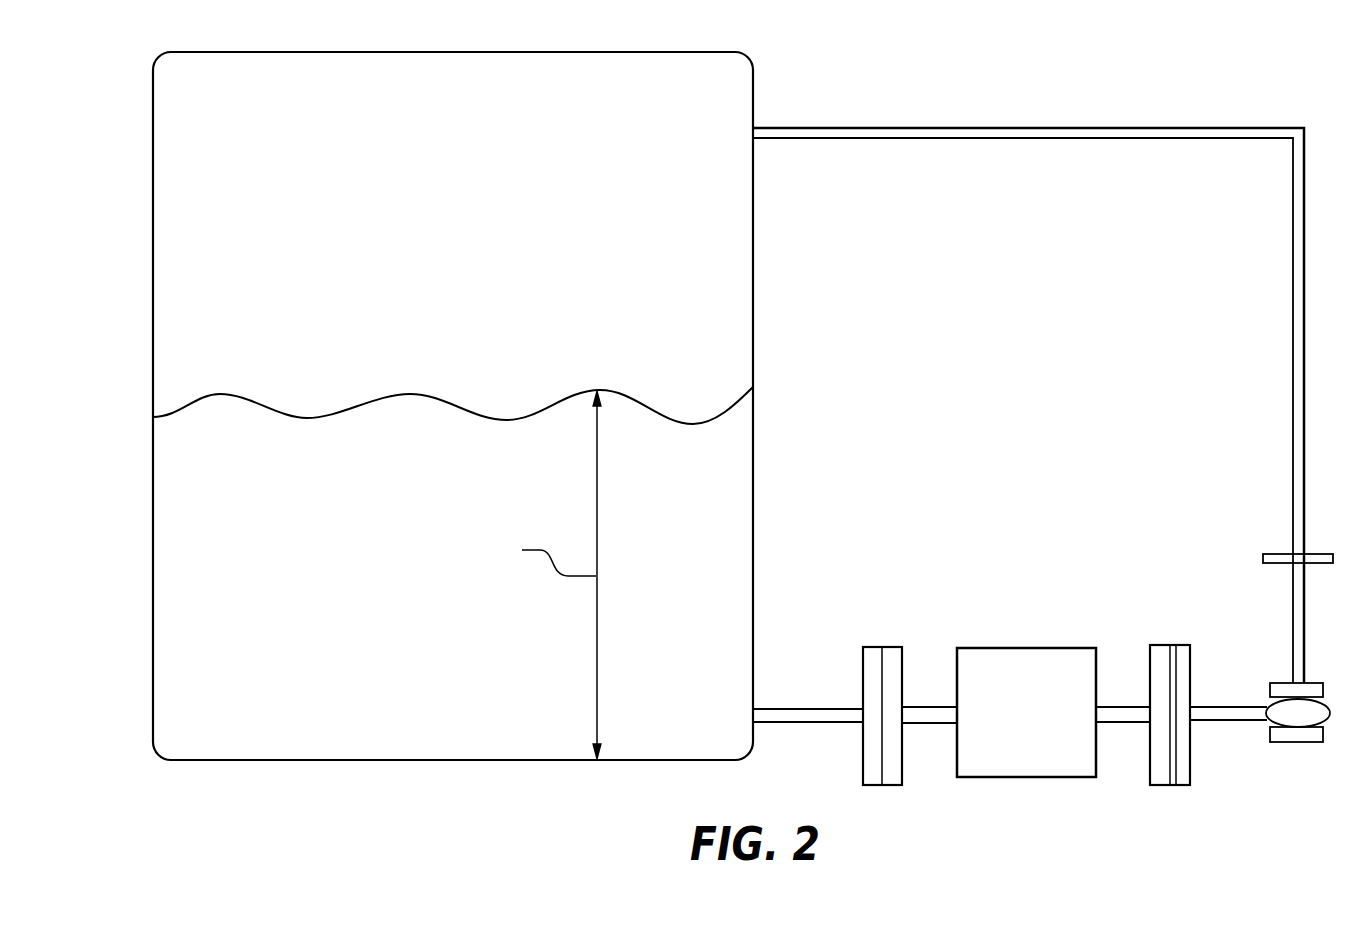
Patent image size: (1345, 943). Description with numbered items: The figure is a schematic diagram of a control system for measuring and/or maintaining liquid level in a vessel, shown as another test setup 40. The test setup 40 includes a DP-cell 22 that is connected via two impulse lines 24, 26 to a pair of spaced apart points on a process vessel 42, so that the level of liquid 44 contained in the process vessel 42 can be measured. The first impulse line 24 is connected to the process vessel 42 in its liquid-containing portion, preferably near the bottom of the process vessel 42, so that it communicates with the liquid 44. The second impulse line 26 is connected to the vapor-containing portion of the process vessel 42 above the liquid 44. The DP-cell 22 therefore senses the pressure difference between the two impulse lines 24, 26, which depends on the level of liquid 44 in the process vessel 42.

The test setup 40 is at (897, 78).
The process vessel 42 is at (153, 302).
The liquid 44 is at (294, 612).
The impulse line 24 is at (784, 709).
The DP-cell 22 is at (1017, 648).
The impulse line 26 is at (1292, 280).